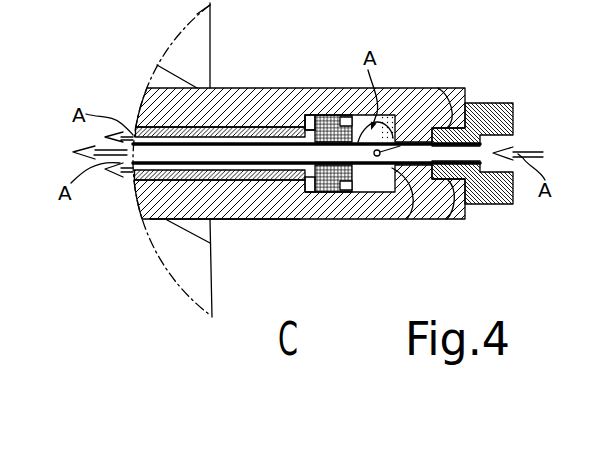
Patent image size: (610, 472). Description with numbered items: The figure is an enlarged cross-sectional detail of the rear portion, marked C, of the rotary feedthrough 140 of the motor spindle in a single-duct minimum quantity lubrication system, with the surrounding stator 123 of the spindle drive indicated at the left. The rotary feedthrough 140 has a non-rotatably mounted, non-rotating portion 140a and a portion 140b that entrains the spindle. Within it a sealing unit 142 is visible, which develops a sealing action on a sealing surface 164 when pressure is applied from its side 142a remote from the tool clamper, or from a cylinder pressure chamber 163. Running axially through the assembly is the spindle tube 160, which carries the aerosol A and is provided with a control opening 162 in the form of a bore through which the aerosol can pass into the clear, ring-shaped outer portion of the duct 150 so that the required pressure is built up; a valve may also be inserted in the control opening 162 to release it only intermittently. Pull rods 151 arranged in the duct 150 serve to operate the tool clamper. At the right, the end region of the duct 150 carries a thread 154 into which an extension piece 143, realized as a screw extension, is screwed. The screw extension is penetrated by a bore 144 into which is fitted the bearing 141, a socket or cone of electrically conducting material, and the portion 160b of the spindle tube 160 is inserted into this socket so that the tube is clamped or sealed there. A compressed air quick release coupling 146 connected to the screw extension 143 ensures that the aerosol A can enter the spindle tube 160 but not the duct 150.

The stator 123 is at (180, 62).
The rotary feedthrough 140 is at (268, 72).
The non-rotating portion 140a is at (291, 196).
The portion entraining the spindle 140b is at (246, 195).
The bearing 141 is at (438, 88).
The sealing unit 142 is at (322, 117).
The side remote from the tool clamper 142a is at (366, 183).
The extension piece 143 is at (480, 103).
The bore 144 is at (516, 137).
The compressed air quick release coupling 146 is at (495, 210).
The duct 150 is at (213, 140).
The pull rods 151 is at (157, 126).
The thread 154 is at (447, 219).
The spindle tube 160 is at (147, 176).
The portion of the spindle tube 160b is at (170, 220).
The control opening 162 is at (390, 113).
The cylinder pressure chamber 163 is at (407, 219).
The sealing surface 164 is at (304, 118).